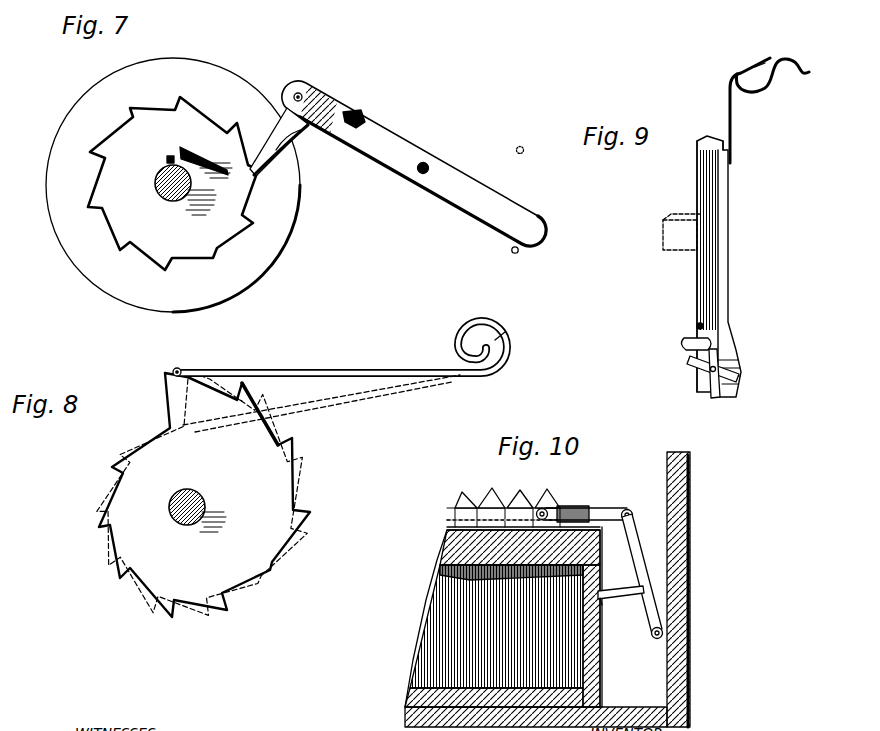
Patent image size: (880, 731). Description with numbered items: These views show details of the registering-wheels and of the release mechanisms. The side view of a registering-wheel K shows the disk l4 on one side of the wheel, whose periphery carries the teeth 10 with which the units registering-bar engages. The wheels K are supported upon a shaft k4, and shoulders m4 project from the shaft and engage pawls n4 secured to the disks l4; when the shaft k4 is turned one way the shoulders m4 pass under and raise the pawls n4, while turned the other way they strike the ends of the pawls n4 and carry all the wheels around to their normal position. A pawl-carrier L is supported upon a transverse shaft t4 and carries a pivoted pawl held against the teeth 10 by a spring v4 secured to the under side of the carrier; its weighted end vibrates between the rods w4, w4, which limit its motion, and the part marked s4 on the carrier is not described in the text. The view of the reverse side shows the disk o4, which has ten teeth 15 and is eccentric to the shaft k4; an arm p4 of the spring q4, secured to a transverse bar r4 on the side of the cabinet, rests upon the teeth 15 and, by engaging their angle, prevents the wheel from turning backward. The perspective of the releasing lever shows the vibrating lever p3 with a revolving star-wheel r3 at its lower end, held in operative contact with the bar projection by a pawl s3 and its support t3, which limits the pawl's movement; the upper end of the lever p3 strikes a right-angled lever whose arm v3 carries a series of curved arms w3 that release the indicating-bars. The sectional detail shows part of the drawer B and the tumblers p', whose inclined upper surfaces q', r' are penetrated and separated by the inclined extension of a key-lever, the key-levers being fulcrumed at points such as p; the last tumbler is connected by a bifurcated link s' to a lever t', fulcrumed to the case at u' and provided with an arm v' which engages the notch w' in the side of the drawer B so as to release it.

In FIG. 7, the registering-wheel K is at (173, 185).
In FIG. 7, the teeth 10 is at (90, 152).
In FIG. 7, the disk l4 is at (173, 183).
In FIG. 7, the shaft k4 is at (157, 184).
In FIG. 8, the shaft k4 is at (170, 510).
In FIG. 7, the shoulders m4 is at (170, 157).
In FIG. 7, the pawls n4 is at (200, 160).
In FIG. 7, the pawl-carrier L is at (414, 163).
In FIG. 7, the spring v4 is at (304, 136).
In FIG. 7, the rods w4 is at (296, 100).
In FIG. 7, the stop s4 is at (362, 120).
In FIG. 7, the transverse shaft t4 is at (427, 165).
In FIG. 8, the disk o4 is at (204, 495).
In FIG. 8, the teeth 15 is at (110, 456).
In FIG. 8, the spring q4 is at (343, 376).
In FIG. 8, the transverse bar r4 is at (504, 329).
In FIG. 8, the arm p4 is at (160, 356).
In FIG. 9, the vibrating lever p3 is at (730, 248).
In FIG. 9, the curved arms w3 is at (802, 78).
In FIG. 9, the arm v3 is at (756, 56).
In FIG. 9, the support t3 is at (680, 322).
In FIG. 9, the pawl s3 is at (684, 346).
In FIG. 9, the star-wheel r3 is at (703, 366).
In FIG. 10, the drawer B is at (502, 618).
In FIG. 10, the fulcrum p is at (523, 518).
In FIG. 10, the inclined upper surface q' is at (466, 489).
In FIG. 10, the inclined upper surface r' is at (519, 488).
In FIG. 10, the tumblers p' is at (582, 503).
In FIG. 10, the bifurcated link s' is at (628, 503).
In FIG. 10, the lever t' is at (642, 574).
In FIG. 10, the fulcrum u' is at (646, 642).
In FIG. 10, the arm v' is at (621, 581).
In FIG. 10, the notch w' is at (613, 610).